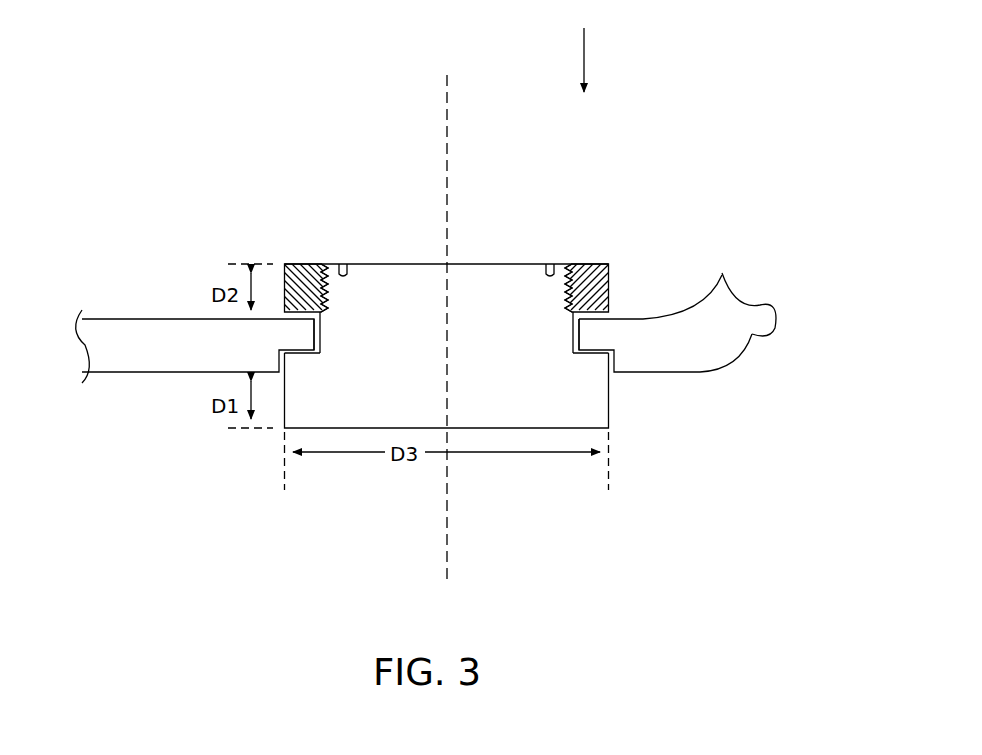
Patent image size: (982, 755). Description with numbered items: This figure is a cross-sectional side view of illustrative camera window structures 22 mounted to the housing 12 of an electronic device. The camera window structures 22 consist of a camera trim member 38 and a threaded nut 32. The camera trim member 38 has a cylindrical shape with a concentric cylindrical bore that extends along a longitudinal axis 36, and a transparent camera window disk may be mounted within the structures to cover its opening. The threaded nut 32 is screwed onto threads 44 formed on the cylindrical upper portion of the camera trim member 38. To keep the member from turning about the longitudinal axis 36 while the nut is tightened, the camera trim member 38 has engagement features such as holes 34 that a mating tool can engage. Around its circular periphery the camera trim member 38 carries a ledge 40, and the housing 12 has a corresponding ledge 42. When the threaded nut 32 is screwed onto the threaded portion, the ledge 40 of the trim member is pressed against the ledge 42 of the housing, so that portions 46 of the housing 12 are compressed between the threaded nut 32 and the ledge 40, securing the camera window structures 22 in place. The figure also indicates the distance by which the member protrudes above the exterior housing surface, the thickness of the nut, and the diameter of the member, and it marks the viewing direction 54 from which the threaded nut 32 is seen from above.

The housing 12 is at (110, 372).
The camera window structures 22 is at (262, 511).
The threaded nut 32 is at (609, 283).
The holes 34 is at (342, 264).
The longitudinal axis 36 is at (447, 127).
The camera trim member 38 is at (603, 413).
The ledge 40 is at (320, 358).
The ledge 42 is at (311, 350).
The threads 44 is at (327, 290).
The portions of housing 46 is at (300, 330).
The direction 54 is at (584, 58).